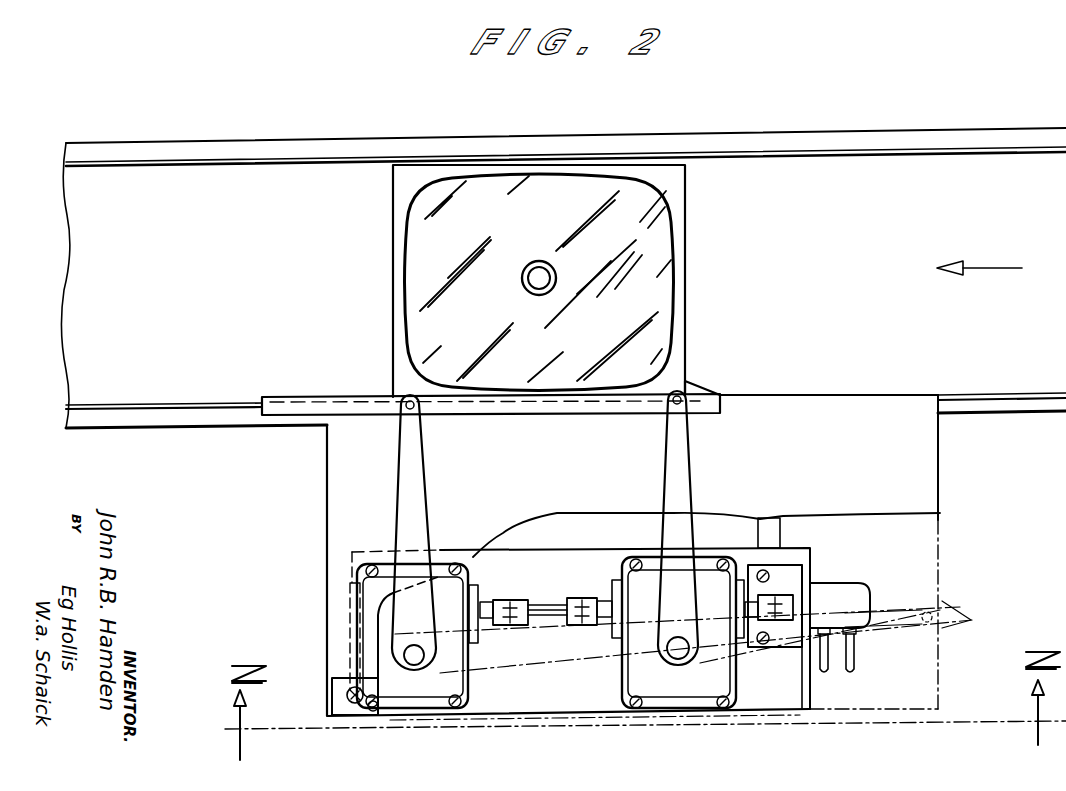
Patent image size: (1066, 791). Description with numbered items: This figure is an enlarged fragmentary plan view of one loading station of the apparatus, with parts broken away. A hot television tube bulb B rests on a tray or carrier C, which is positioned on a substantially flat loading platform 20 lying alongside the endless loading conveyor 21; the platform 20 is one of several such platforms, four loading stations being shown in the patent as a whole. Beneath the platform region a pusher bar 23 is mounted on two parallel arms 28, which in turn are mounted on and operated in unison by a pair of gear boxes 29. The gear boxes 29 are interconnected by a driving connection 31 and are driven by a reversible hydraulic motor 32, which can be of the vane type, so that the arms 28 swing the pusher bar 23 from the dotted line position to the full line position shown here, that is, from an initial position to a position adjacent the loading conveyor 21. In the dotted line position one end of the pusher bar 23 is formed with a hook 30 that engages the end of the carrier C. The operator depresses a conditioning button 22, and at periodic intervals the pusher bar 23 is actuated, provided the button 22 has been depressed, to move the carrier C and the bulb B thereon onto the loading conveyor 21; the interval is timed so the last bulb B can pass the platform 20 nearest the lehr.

The loading platform 20 is at (345, 479).
The loading conveyor 21 is at (760, 90).
The conditioning button 22 is at (343, 711).
The pusher bar 23 is at (354, 396).
The parallel arms 28 is at (421, 468).
The gear boxes 29 is at (427, 688).
The hook 30 is at (700, 390).
The driving connection 31 is at (565, 577).
The reversible hydraulic motor 32 is at (887, 557).
The television tube bulb B is at (640, 227).
The carrier C is at (678, 318).